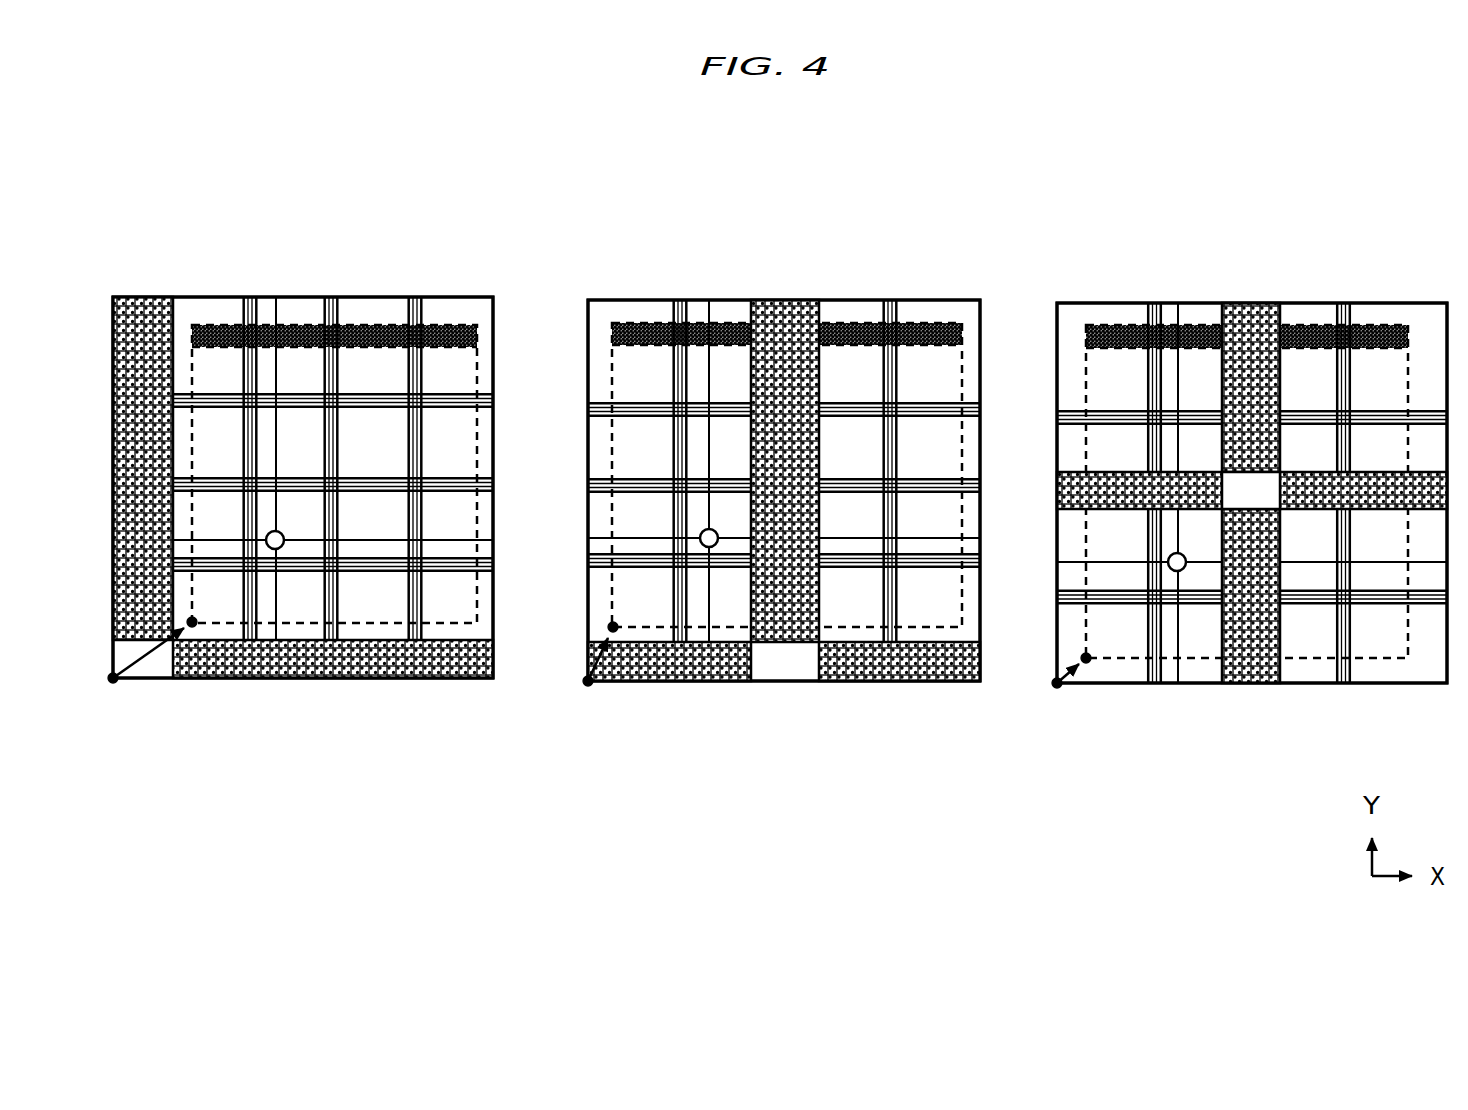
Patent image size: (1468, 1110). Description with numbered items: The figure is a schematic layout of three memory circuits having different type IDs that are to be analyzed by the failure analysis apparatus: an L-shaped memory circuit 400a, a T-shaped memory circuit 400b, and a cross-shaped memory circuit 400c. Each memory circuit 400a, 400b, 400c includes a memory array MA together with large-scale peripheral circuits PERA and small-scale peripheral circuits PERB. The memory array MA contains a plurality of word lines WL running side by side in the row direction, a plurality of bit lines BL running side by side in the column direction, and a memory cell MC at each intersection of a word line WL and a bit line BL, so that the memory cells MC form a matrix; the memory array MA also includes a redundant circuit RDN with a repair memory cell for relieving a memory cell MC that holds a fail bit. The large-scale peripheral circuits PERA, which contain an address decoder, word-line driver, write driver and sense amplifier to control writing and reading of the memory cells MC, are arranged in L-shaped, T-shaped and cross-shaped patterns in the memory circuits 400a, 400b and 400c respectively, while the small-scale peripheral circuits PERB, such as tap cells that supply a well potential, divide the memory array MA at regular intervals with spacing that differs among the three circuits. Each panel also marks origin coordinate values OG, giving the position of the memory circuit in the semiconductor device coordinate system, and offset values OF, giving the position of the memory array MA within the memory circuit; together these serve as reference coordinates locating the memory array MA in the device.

The L-shaped memory circuit 400a is at (305, 216).
The T-shaped memory circuit 400b is at (782, 216).
The cross-shaped memory circuit 400c is at (1247, 215).
The large-scale peripheral circuit PERA is at (132, 297).
The small-scale peripheral circuit PERB is at (243, 312).
The redundant circuit RDN is at (380, 323).
The word line WL is at (273, 433).
The bit line BL is at (373, 538).
The memory cell MC is at (741, 535).
The memory array MA is at (447, 627).
The offset values (OFx, OFy) OF is at (152, 653).
The origin coordinate values (OGx, OGy) OG is at (113, 686).